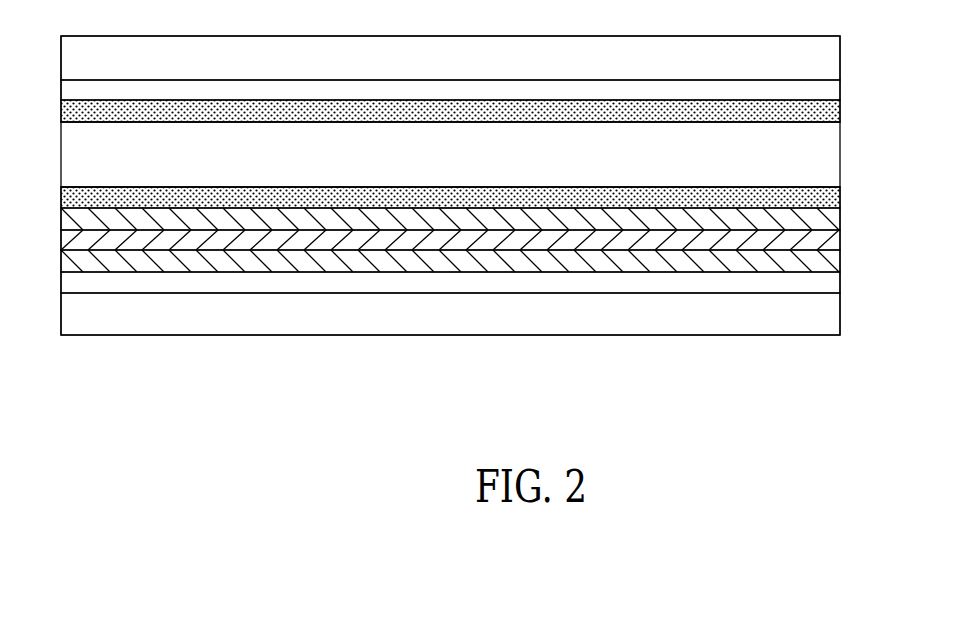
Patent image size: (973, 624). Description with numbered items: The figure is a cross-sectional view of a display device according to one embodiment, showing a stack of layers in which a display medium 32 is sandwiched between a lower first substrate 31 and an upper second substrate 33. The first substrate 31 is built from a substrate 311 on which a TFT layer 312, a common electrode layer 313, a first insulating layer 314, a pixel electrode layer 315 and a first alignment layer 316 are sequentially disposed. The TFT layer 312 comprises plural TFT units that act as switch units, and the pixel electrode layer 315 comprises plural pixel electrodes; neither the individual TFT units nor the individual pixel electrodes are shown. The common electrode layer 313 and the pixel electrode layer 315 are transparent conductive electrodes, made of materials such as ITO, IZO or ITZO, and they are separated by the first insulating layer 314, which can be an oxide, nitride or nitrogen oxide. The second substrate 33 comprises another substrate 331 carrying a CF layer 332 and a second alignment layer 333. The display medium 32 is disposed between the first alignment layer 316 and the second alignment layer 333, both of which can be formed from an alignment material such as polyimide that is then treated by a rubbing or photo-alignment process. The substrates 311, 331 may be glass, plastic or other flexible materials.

The first substrate 31 is at (511, 250).
The substrate 311 is at (489, 314).
The TFT layer 312 is at (840, 282).
The common electrode layer 313 is at (840, 262).
The first insulating layer 314 is at (840, 240).
The pixel electrode layer 315 is at (840, 220).
The first alignment layer 316 is at (840, 197).
The display medium 32 is at (840, 152).
The second substrate 33 is at (511, 83).
The substrate 331 is at (840, 58).
The CF layer 332 is at (840, 87).
The second alignment layer 333 is at (840, 112).